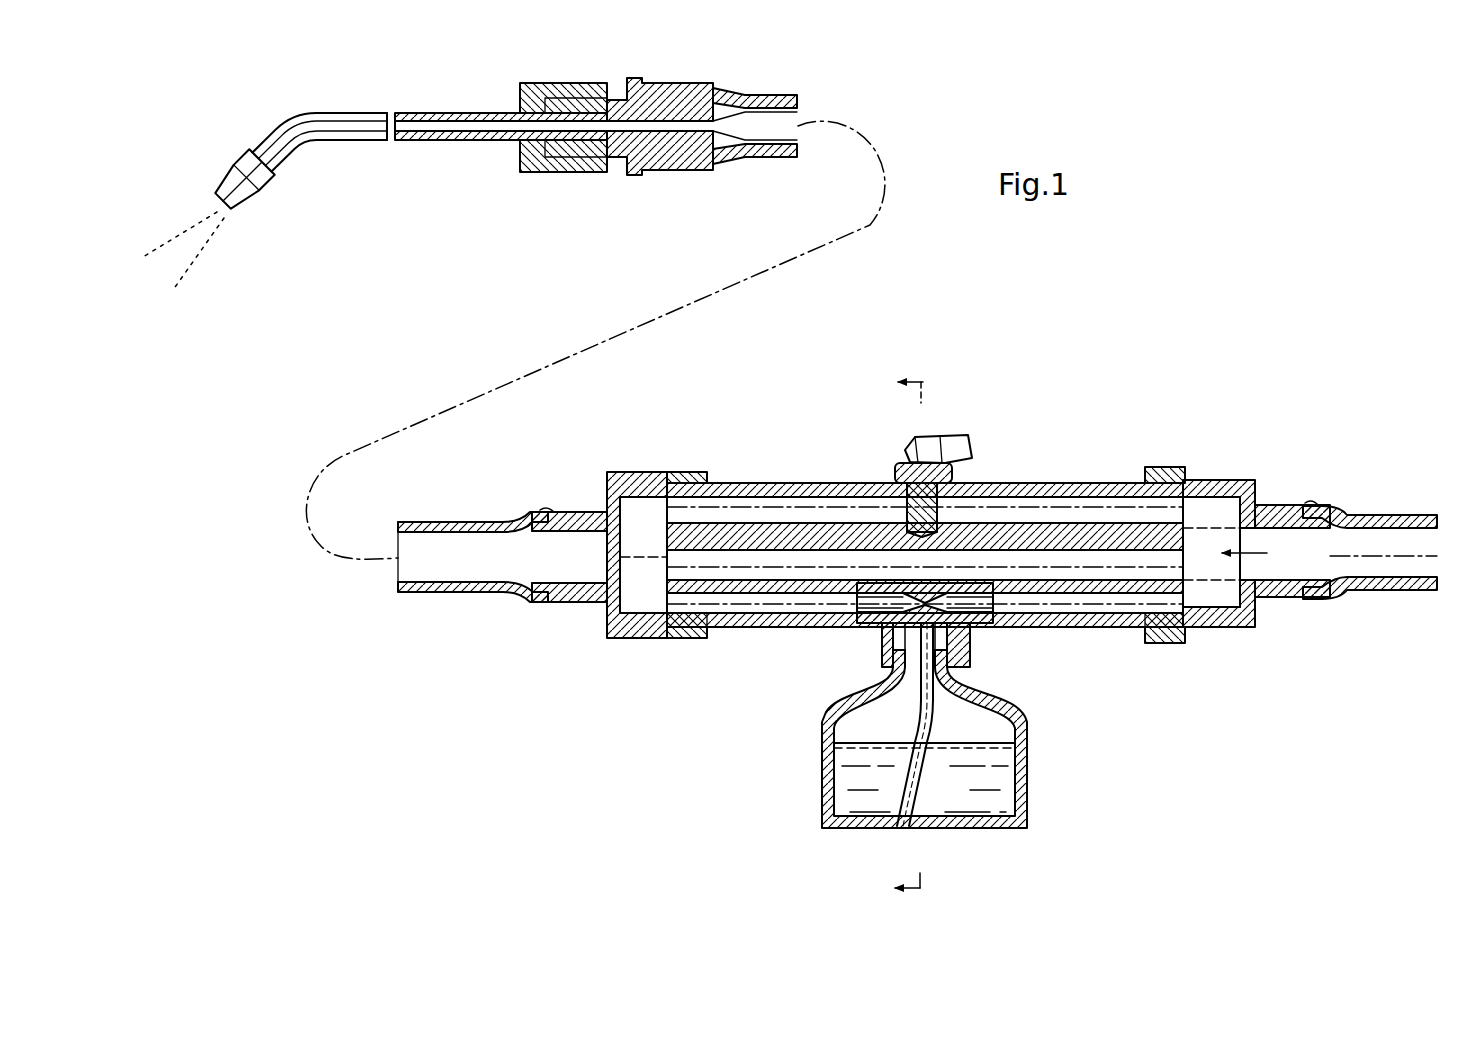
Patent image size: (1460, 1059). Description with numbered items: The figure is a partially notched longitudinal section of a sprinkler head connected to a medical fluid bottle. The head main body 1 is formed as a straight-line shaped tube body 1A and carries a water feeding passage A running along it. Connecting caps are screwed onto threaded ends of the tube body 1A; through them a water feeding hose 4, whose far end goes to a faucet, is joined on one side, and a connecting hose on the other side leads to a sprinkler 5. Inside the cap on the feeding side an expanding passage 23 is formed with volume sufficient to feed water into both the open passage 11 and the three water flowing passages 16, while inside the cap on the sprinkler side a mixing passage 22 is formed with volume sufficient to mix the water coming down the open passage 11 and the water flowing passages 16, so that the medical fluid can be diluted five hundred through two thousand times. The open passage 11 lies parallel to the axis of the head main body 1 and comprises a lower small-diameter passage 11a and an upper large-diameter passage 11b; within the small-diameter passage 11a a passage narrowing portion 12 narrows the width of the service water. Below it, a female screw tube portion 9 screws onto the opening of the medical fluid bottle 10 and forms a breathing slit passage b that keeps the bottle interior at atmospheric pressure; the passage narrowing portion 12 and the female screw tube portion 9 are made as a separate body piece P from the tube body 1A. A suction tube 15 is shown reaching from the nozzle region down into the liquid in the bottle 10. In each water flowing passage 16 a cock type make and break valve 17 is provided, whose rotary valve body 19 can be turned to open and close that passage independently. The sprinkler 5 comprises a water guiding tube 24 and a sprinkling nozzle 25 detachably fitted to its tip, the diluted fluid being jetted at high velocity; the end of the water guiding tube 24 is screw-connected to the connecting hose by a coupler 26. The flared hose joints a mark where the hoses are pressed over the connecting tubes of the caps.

The head main body 1 is at (969, 614).
The straight-line shaped tube body 1A is at (1007, 485).
The water feeding hose 4 is at (1405, 555).
The sprinkler 5 is at (428, 219).
The female screw tube portion 9 is at (970, 645).
The medical fluid bottle 10 is at (822, 760).
The open passage 11 is at (969, 697).
The small-diameter passage 11a is at (1122, 570).
The large-diameter passage 11b is at (1100, 603).
The passage narrowing portion 12 is at (1027, 627).
The suction tube 15 is at (925, 702).
The water flowing passage 16 is at (1104, 510).
The make and break valve 17 is at (978, 430).
The rotary valve body 19 is at (897, 497).
The mixing passage 22 is at (645, 613).
The expanding passage 23 is at (1223, 607).
The water guiding tube 24 is at (360, 143).
The sprinkling nozzle 25 is at (223, 219).
The coupler 26 is at (567, 172).
The flared joint a is at (548, 512).
The breathing slit passage b is at (880, 648).
The separate body piece P is at (825, 627).
The water feeding passage A is at (1278, 600).